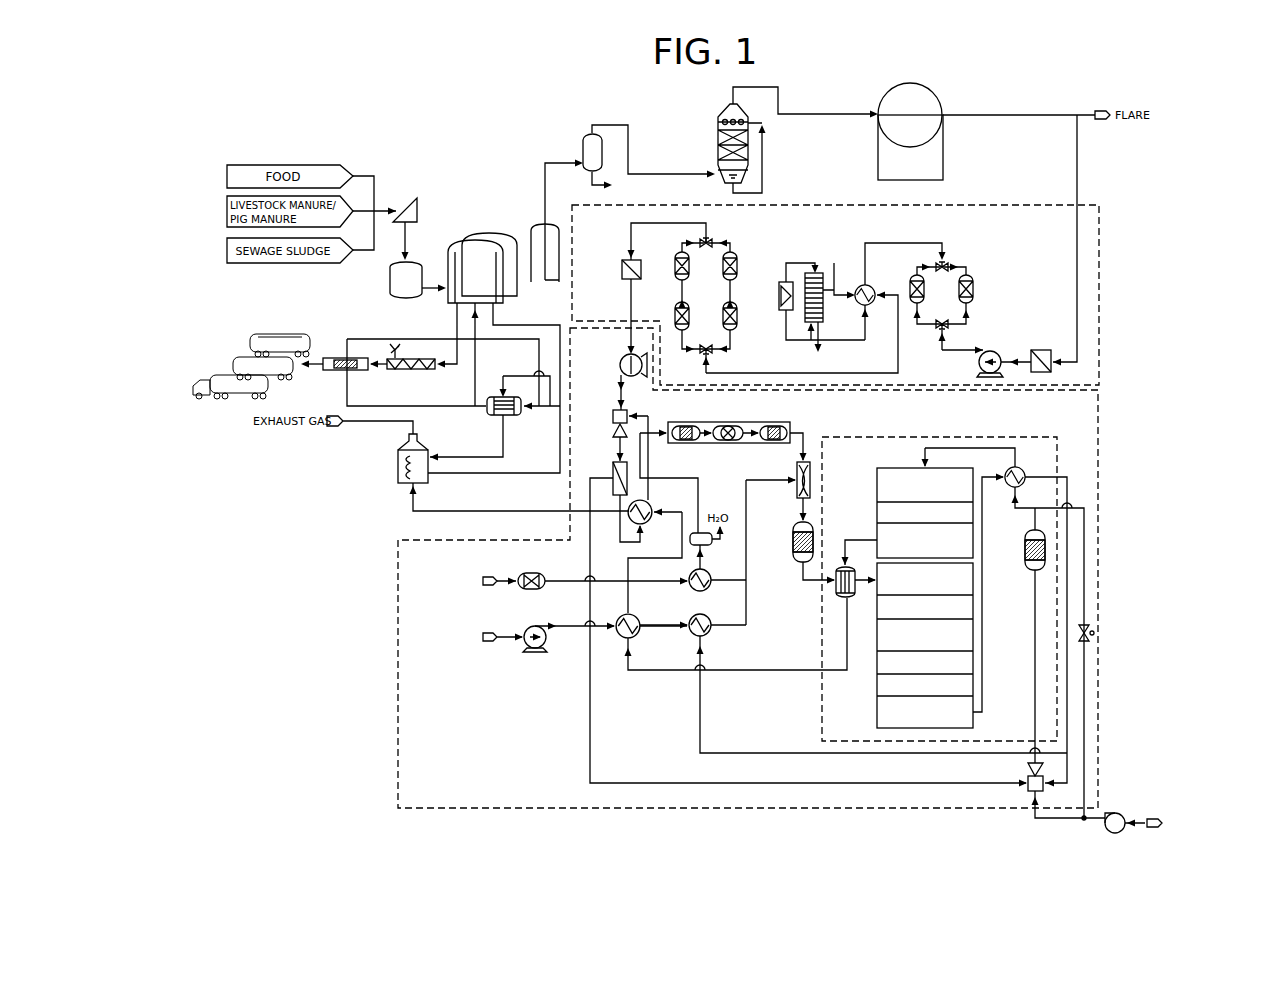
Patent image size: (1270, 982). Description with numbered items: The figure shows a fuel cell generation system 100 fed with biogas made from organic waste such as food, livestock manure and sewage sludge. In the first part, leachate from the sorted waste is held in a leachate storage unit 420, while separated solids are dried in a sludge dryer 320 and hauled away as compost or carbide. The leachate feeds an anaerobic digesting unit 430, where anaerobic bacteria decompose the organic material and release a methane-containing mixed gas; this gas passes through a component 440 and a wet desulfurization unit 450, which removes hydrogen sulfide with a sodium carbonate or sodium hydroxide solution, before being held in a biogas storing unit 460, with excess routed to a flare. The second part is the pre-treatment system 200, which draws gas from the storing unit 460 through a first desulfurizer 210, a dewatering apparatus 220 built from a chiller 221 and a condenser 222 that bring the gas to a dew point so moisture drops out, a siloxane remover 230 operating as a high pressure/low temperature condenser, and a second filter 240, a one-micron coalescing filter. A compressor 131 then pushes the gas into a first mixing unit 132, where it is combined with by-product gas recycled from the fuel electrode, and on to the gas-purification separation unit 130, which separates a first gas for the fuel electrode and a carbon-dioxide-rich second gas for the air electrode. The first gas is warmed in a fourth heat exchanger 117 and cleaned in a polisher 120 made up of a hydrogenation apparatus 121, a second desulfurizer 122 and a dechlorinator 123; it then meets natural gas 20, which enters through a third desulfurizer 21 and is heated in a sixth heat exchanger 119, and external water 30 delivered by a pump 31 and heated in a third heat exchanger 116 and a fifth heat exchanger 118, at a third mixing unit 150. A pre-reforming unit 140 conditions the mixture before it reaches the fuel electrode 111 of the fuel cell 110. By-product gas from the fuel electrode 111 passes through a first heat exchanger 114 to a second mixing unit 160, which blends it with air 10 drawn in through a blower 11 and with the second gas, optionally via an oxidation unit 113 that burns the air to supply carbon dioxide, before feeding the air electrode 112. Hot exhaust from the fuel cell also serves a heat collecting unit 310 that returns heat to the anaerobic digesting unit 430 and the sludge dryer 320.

The air 10 is at (1177, 823).
The air blower 11 is at (1113, 813).
The natural gas 20 is at (471, 582).
The third desulfurizer 21 is at (532, 573).
The external water 30 is at (465, 638).
The pump 31 is at (535, 652).
The fuel cell generation system 100 is at (398, 672).
The fuel cell 110 is at (939, 437).
The fuel electrode 111 is at (877, 685).
The air electrode 112 is at (877, 508).
The oxidation unit 113 is at (1025, 550).
The first heat exchanger 114 is at (1022, 470).
The third heat exchanger 116 is at (637, 616).
The fourth heat exchanger 117 is at (650, 519).
The fifth heat exchanger 118 is at (711, 619).
The sixth heat exchanger 119 is at (711, 574).
The polisher 120 is at (729, 436).
The apparatus for performing hydrogenation 121 is at (686, 424).
The second desulfurizer 122 is at (729, 424).
The dechlorinator 123 is at (772, 424).
The gas-purification separation unit 130 is at (613, 471).
The compressor 131 is at (620, 366).
The first mixing unit 132 is at (413, 199).
The pre-reforming unit 140 is at (793, 540).
The third mixing unit 150 is at (797, 491).
The second mixing unit 160 is at (1028, 779).
The pre-treatment system 200 is at (1024, 205).
The first desulfurizer 210 is at (976, 270).
The dewatering apparatus 220 is at (815, 260).
The chiller 221 is at (779, 297).
The condenser 222 is at (872, 286).
The siloxane remover 230 is at (743, 242).
The second filter 240 is at (622, 270).
The heat collecting unit 310 is at (398, 465).
The sludge dryer 320 is at (333, 358).
The leachate storage unit 420 is at (390, 281).
The anaerobic digesting unit 430 is at (471, 233).
The gas holder 440 is at (583, 145).
The wet desulfurization unit 450 is at (718, 145).
The biogas storing unit 460 is at (878, 145).